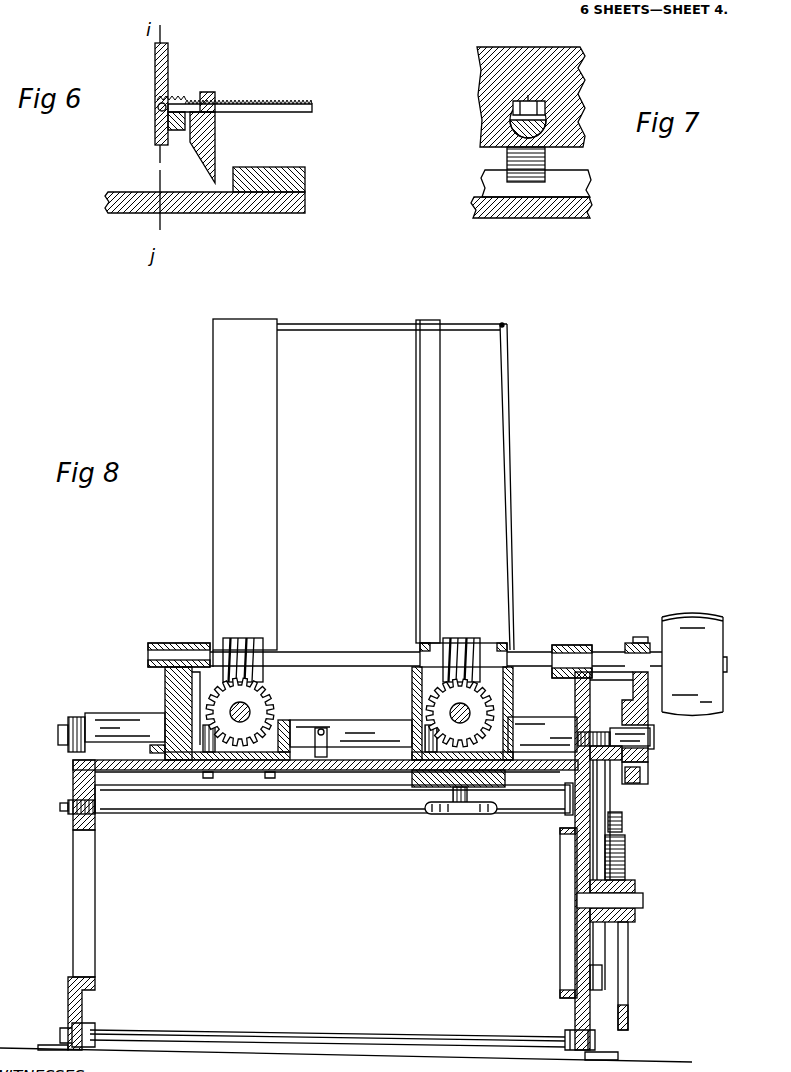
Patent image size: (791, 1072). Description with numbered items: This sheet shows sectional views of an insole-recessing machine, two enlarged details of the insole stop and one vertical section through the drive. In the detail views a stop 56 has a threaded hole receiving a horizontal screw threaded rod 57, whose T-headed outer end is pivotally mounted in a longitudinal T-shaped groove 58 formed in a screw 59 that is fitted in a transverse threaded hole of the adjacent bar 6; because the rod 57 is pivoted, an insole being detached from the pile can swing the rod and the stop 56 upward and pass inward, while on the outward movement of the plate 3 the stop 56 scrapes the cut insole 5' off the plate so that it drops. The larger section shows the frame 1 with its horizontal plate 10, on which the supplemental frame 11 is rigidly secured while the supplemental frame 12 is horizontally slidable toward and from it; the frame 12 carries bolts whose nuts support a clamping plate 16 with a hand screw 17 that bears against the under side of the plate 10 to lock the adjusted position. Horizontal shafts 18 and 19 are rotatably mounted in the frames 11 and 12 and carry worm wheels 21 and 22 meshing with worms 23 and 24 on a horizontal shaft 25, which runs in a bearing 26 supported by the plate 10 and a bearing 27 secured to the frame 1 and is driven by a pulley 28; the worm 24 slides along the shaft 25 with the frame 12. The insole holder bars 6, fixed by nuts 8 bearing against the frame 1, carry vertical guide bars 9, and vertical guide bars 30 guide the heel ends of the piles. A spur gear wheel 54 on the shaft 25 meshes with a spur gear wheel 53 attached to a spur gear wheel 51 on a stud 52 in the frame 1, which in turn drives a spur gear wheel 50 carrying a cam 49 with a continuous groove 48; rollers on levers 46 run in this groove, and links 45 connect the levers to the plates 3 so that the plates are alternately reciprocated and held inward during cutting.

In FIG. 8, the frame 1 is at (73, 856).
In FIG. 6, the horizontal plate 3 is at (306, 205).
In FIG. 7, the horizontal plate 3 is at (563, 205).
In FIG. 6, the detached insole 5' is at (285, 179).
In FIG. 7, the detached insole 5' is at (519, 183).
In FIG. 6, the horizontal bar 6 is at (155, 73).
In FIG. 7, the horizontal bar 6 is at (488, 73).
In FIG. 8, the horizontal bar 6 is at (112, 714).
In FIG. 8, the nut 8 is at (63, 737).
In FIG. 8, the vertical guide bar 9 is at (277, 515).
In FIG. 8, the horizontal plate 10 is at (340, 771).
In FIG. 8, the supplemental frame 11 is at (252, 762).
In FIG. 8, the supplemental frame 12 is at (510, 722).
In FIG. 8, the clamping plate 16 is at (488, 815).
In FIG. 8, the hand screw 17 is at (464, 814).
In FIG. 8, the horizontal shaft 18 is at (250, 710).
In FIG. 8, the horizontal shaft 19 is at (470, 712).
In FIG. 8, the worm wheel 21 is at (175, 700).
In FIG. 8, the worm wheel 22 is at (412, 703).
In FIG. 8, the worm 23 is at (238, 638).
In FIG. 8, the worm 24 is at (447, 645).
In FIG. 8, the horizontal shaft 25 is at (340, 656).
In FIG. 8, the bearing 26 is at (178, 640).
In FIG. 8, the bearing 27 is at (570, 645).
In FIG. 8, the pulley 28 is at (704, 612).
In FIG. 8, the vertical guide bar 30 is at (510, 418).
In FIG. 8, the link 45 is at (649, 755).
In FIG. 8, the lever 46 is at (612, 800).
In FIG. 8, the continuous groove 48 is at (618, 838).
In FIG. 8, the cam 49 is at (623, 826).
In FIG. 8, the spur gear wheel 50 is at (629, 945).
In FIG. 8, the spur gear wheel 51 is at (630, 702).
In FIG. 8, the stud 52 is at (655, 739).
In FIG. 8, the spur gear wheel 53 is at (649, 776).
In FIG. 8, the spur gear wheel 54 is at (640, 640).
In FIG. 6, the stop 56 is at (218, 137).
In FIG. 7, the stop 56 is at (546, 158).
In FIG. 8, the stop 56 is at (314, 740).
In FIG. 6, the screw threaded rod 57 is at (262, 104).
In FIG. 7, the screw threaded rod 57 is at (485, 116).
In FIG. 8, the screw threaded rod 57 is at (332, 722).
In FIG. 6, the T-shaped groove 58 is at (184, 98).
In FIG. 7, the T-shaped groove 58 is at (515, 97).
In FIG. 6, the screw 59 is at (157, 123).
In FIG. 7, the screw 59 is at (505, 128).